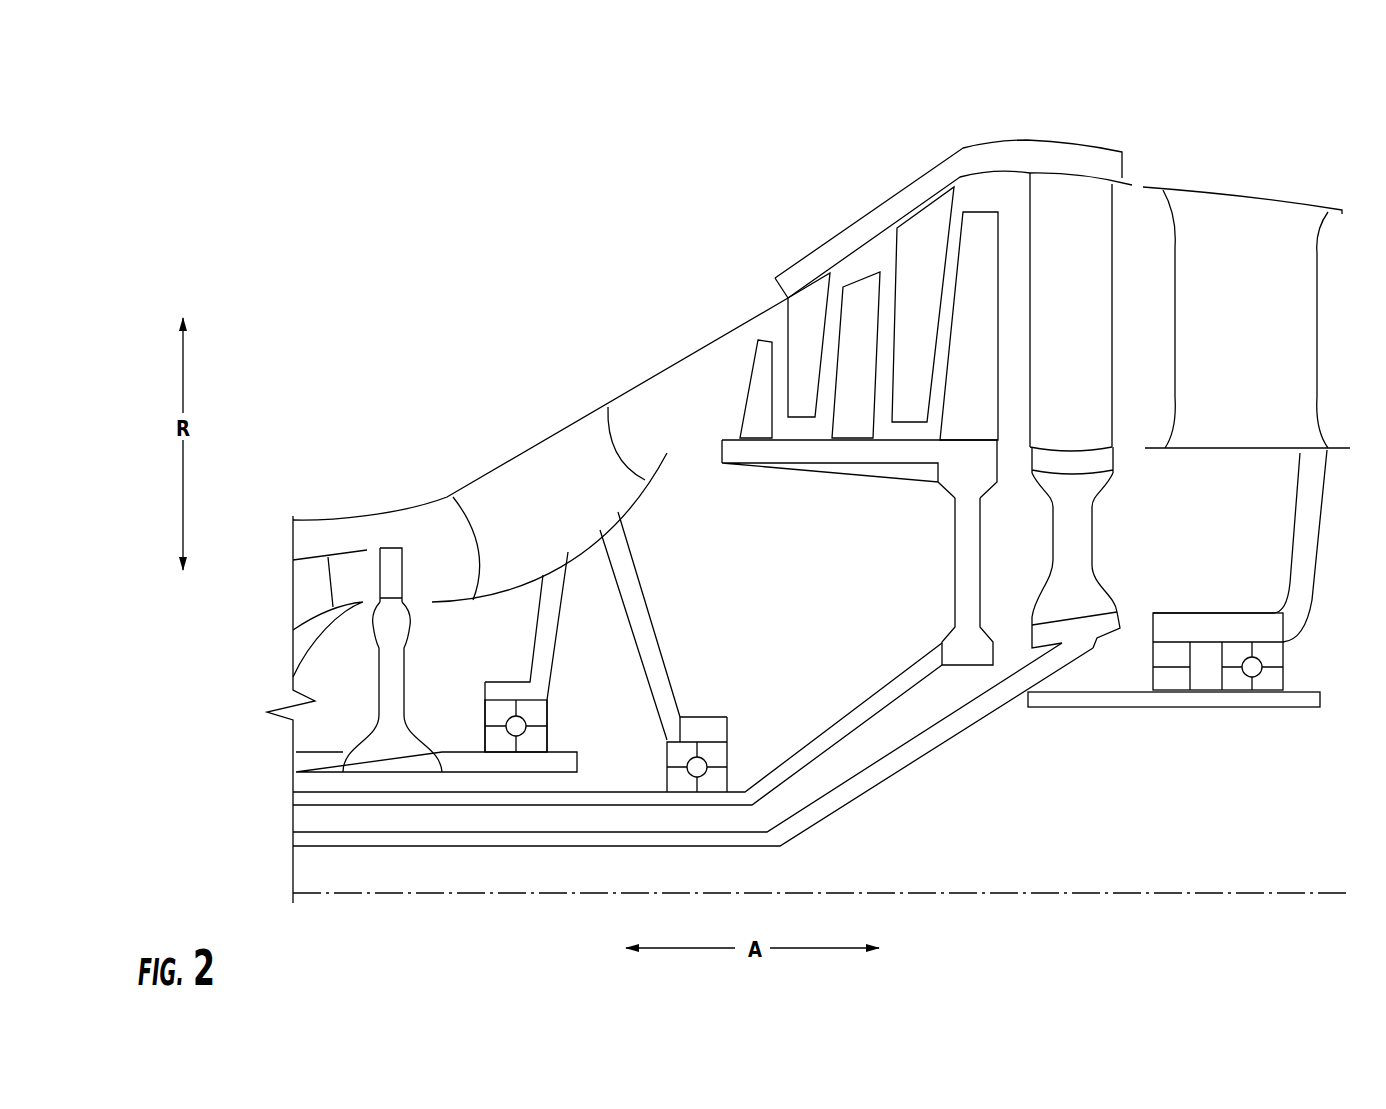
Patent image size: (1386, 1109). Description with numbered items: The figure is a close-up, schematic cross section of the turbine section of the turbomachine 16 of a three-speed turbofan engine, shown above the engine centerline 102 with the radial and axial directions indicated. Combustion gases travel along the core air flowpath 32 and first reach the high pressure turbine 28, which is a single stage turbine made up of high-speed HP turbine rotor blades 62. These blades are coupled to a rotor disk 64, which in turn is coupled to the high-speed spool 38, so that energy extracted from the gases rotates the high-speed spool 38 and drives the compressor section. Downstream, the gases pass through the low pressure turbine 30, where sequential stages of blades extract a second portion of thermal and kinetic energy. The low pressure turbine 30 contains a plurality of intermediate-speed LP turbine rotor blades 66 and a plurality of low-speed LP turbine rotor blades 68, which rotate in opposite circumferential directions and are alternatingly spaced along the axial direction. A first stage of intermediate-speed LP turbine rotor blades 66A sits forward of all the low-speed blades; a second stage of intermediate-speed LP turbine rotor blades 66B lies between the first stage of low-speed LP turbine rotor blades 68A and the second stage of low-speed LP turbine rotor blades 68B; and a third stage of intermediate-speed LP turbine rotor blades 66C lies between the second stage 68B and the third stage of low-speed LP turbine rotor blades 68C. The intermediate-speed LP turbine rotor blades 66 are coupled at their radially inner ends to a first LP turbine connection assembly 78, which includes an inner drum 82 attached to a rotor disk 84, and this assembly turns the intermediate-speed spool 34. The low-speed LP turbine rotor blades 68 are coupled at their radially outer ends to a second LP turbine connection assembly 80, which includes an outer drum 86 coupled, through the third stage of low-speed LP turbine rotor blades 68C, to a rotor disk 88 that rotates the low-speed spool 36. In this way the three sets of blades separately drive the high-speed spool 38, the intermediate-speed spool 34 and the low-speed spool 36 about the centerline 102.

The turbomachine 16 is at (510, 182).
The high pressure (HP) turbine 28 is at (403, 483).
The low pressure (LP) turbine 30 is at (1016, 387).
The core air flowpath 32 is at (650, 405).
The intermediate-speed spool 34 is at (860, 705).
The low-speed spool 36 is at (912, 758).
The high-speed spool 38 is at (312, 760).
The high-speed HP turbine rotor blades 62 is at (404, 573).
The rotor disk 64 is at (405, 683).
The intermediate-speed LP turbine rotor blades 66 is at (858, 344).
The first stage of intermediate-speed LP turbine rotor blades 66A is at (760, 388).
The second stage of intermediate-speed LP turbine rotor blades 66B is at (853, 400).
The third stage of intermediate-speed LP turbine rotor blades 66C is at (980, 375).
The low-speed LP turbine rotor blades 68 is at (949, 273).
The first stage of low-speed LP turbine rotor blades 68A is at (808, 333).
The second stage of low-speed LP turbine rotor blades 68B is at (927, 280).
The third stage of low-speed LP turbine rotor blades 68C is at (1090, 262).
The first LP turbine connection assembly 78 is at (796, 554).
The second LP turbine connection assembly 80 is at (1088, 122).
The inner drum 82 is at (853, 450).
The rotor disk 84 is at (965, 543).
The outer drum 86 is at (990, 152).
The rotor disk 88 is at (1080, 535).
The engine centerline axis 102 is at (1100, 889).